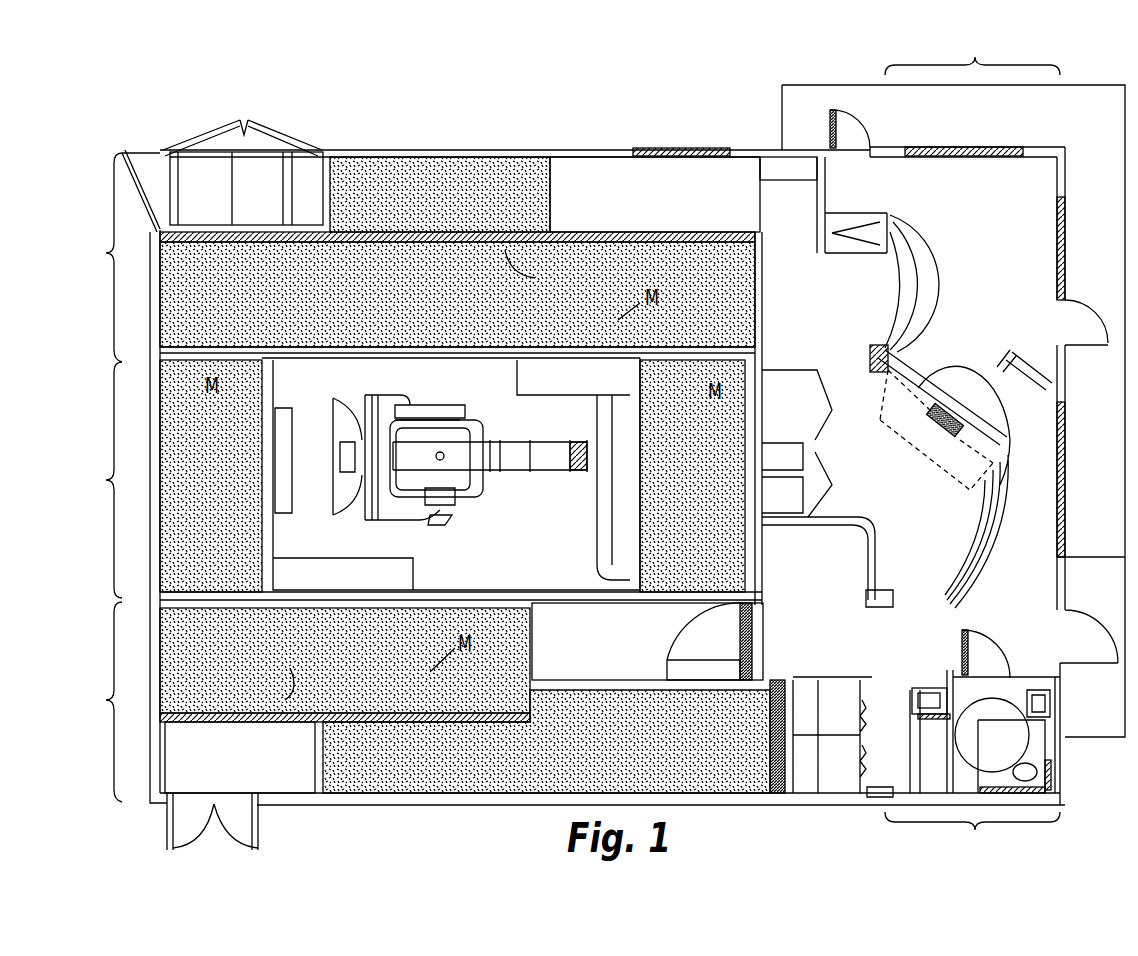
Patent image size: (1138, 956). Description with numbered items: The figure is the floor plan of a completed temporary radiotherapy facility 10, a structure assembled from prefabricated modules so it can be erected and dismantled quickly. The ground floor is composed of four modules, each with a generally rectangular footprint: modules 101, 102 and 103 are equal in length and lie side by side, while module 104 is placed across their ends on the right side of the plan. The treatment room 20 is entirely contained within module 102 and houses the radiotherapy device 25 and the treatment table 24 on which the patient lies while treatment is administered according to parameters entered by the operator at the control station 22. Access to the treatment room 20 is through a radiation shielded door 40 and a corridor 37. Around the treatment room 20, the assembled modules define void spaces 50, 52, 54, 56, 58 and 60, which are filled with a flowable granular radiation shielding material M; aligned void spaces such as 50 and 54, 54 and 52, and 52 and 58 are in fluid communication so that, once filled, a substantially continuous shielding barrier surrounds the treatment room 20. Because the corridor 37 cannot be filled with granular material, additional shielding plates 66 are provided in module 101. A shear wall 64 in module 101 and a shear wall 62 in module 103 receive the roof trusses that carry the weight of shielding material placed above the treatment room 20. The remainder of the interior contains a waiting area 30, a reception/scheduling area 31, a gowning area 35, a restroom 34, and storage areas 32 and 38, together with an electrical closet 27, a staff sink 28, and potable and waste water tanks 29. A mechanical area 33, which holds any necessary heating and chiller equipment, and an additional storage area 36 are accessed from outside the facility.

The temporary radiotherapy facility 10 is at (170, 92).
The treatment room 20 is at (540, 557).
The control station 22 is at (913, 443).
The treatment table 24 is at (500, 432).
The radiotherapy device 25 is at (395, 405).
The electrical closet 27 is at (786, 410).
The staff sink 28 is at (925, 688).
The potable and waste water tanks 29 is at (930, 752).
The waiting area 30 is at (994, 250).
The reception/scheduling area 31 is at (831, 310).
The storage area 32 is at (645, 205).
The mechanical area 33 is at (265, 199).
The restroom 34 is at (1011, 753).
The gowning area 35 is at (851, 719).
The additional storage area 36 is at (245, 767).
The corridor 37 is at (603, 650).
The storage area 38 is at (831, 570).
The radiation shielded door 40 is at (690, 640).
The void space 50 is at (703, 489).
The void space 52 is at (235, 487).
The void space 54 is at (460, 303).
The void space 56 is at (459, 199).
The void space 58 is at (379, 665).
The void space 60 is at (418, 769).
The shear wall 62 is at (532, 273).
The shear wall 64 is at (286, 671).
The shielding plates 66 is at (772, 680).
The module 101 is at (97, 702).
The module 102 is at (97, 480).
The module 103 is at (97, 257).
The module 104 is at (972, 446).